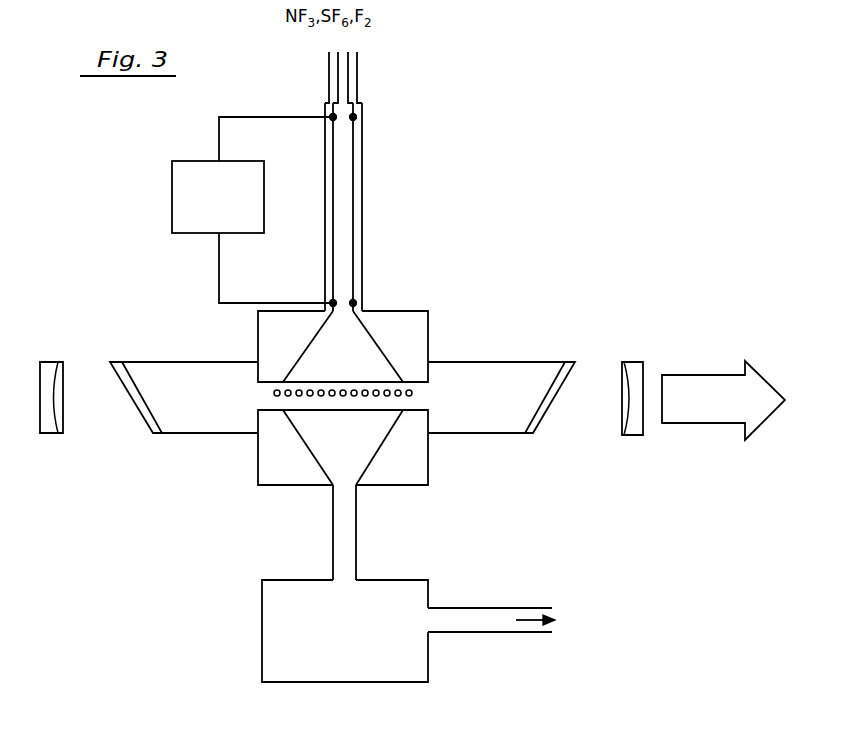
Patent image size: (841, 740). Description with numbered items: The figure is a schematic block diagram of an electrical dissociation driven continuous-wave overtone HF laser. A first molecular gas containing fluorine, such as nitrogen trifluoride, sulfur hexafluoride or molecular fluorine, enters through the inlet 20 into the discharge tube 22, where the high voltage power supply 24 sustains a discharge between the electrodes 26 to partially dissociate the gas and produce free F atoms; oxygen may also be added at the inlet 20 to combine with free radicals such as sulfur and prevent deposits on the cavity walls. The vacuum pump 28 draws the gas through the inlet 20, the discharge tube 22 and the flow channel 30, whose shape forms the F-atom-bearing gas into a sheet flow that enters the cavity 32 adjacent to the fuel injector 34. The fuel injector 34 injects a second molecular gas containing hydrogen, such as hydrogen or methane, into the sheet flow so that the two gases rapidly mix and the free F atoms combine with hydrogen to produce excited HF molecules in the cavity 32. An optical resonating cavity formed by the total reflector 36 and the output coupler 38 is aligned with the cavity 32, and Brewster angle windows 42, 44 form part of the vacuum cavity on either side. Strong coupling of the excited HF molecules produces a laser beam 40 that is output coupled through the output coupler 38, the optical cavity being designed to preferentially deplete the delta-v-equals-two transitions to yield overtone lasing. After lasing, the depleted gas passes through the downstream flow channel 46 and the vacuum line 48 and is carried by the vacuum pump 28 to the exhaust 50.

The inlet 20 is at (357, 82).
The discharge tube 22 is at (362, 210).
The high voltage power supply 24 is at (264, 208).
The electrodes 26 is at (336, 119).
The vacuum pump 28 is at (262, 632).
The flow channel 30 is at (383, 349).
The cavity 32 is at (420, 397).
The fuel injector 34 is at (262, 397).
The total reflector 36 is at (52, 433).
The output coupler 38 is at (632, 435).
The laser beam 40 is at (682, 424).
The Brewster angle window 42 is at (138, 390).
The Brewster angle window 44 is at (547, 400).
The downstream flow channel 46 is at (383, 460).
The vacuum line 48 is at (356, 553).
The exhaust 50 is at (488, 607).